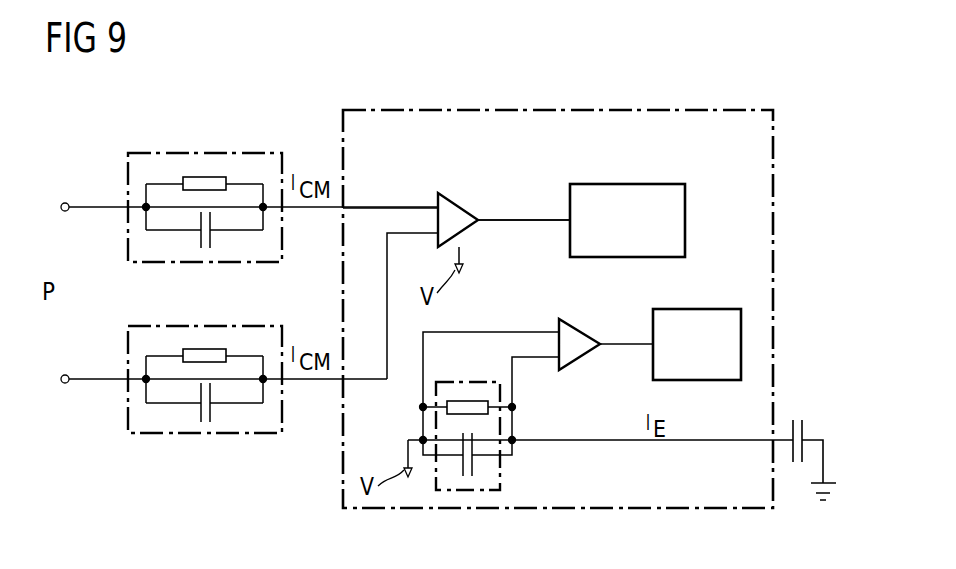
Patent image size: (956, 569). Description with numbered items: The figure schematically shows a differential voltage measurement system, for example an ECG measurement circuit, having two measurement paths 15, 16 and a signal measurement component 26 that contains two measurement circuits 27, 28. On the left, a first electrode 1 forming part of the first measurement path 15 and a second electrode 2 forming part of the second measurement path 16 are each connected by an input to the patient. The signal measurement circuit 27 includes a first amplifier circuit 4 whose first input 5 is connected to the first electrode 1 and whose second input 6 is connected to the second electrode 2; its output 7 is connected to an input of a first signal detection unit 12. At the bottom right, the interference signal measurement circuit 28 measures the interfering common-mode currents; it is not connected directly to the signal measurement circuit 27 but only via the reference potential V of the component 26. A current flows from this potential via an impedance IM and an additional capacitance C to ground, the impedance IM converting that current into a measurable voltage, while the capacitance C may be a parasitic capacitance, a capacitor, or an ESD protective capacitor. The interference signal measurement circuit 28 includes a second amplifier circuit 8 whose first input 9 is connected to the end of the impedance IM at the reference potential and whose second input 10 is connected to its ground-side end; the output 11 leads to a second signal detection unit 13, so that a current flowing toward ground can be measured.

The first electrode 1 is at (218, 153).
The second electrode 2 is at (218, 326).
The first amplifier circuit 4 is at (462, 206).
The first input 5 is at (438, 200).
The second input 6 is at (438, 238).
The output 7 is at (481, 228).
The second amplifier circuit 8 is at (583, 325).
The first input 9 is at (556, 325).
The second input 10 is at (560, 365).
The output 11 is at (605, 352).
The first signal detection unit 12 is at (686, 220).
The second signal detection unit 13 is at (694, 308).
The first measurement path 15 is at (92, 166).
The second measurement path 16 is at (96, 361).
The signal measurement component 26 is at (773, 310).
The signal measurement circuit 27 is at (522, 188).
The interference signal measurement circuit 28 is at (675, 400).
The impedance IM is at (510, 472).
The additional capacitance C is at (803, 425).